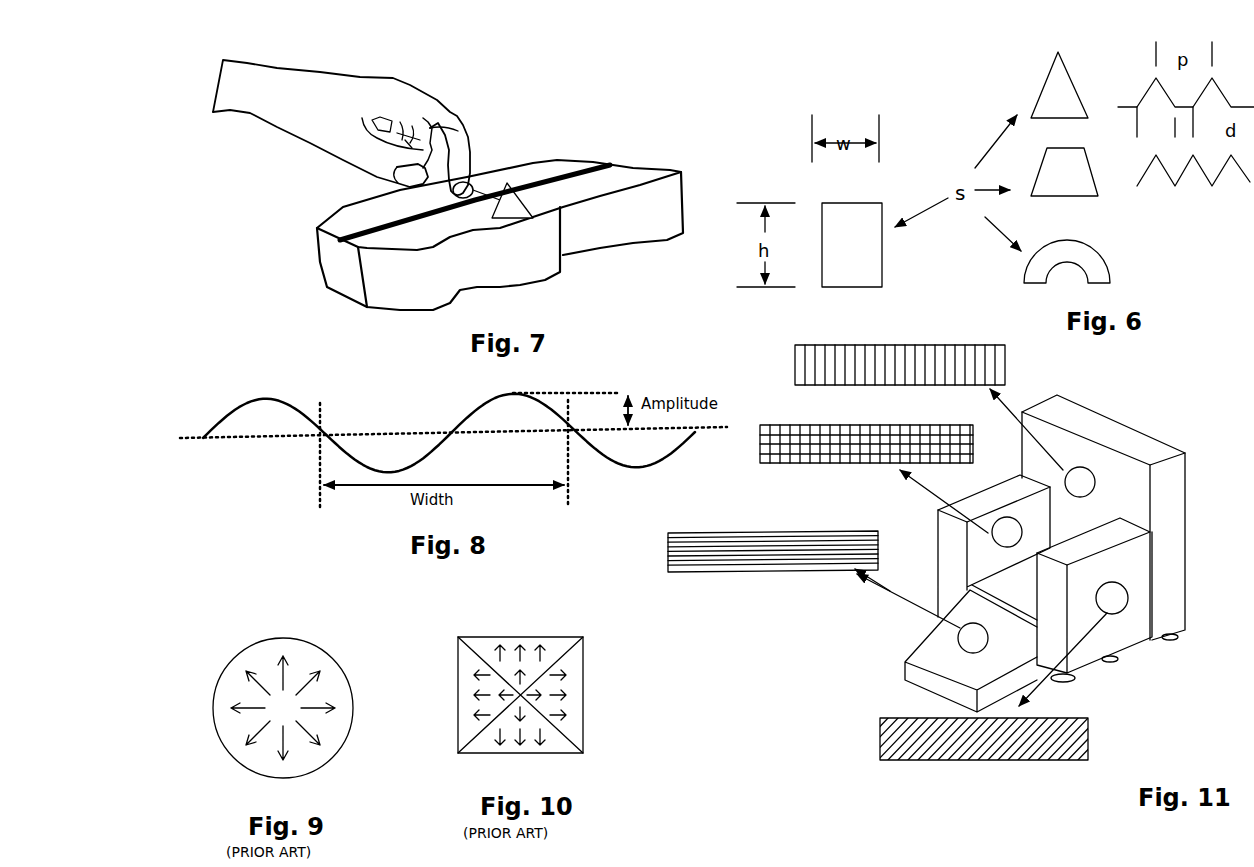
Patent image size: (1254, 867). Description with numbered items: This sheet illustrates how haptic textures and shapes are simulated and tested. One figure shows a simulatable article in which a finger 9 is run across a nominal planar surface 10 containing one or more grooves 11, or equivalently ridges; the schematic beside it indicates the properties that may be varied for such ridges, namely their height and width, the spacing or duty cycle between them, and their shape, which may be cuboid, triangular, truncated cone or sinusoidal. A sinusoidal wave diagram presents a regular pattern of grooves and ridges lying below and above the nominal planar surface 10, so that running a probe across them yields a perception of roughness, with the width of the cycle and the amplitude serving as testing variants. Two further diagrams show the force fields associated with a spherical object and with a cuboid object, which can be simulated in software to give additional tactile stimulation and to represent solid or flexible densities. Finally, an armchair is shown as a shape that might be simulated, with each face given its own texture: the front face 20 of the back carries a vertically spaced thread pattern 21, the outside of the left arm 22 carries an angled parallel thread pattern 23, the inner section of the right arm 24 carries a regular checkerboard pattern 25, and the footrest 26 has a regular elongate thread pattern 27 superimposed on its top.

In FIG. 7, the finger 9 is at (455, 113).
In FIG. 7, the planar surface 10 is at (317, 230).
In FIG. 8, the planar surface 10 is at (237, 433).
In FIG. 7, the grooves 11 is at (608, 158).
In FIG. 11, the front face of the back 20 is at (1140, 478).
In FIG. 11, the vertically spaced thread pattern 21 is at (798, 362).
In FIG. 11, the left arm 22 is at (1108, 647).
In FIG. 11, the angled parallel thread pattern 23 is at (1088, 730).
In FIG. 11, the inner section of the right arm 24 is at (1010, 513).
In FIG. 11, the checkerboard pattern 25 is at (868, 463).
In FIG. 11, the footrest 26 is at (937, 657).
In FIG. 11, the lined surface pattern 27 is at (742, 538).